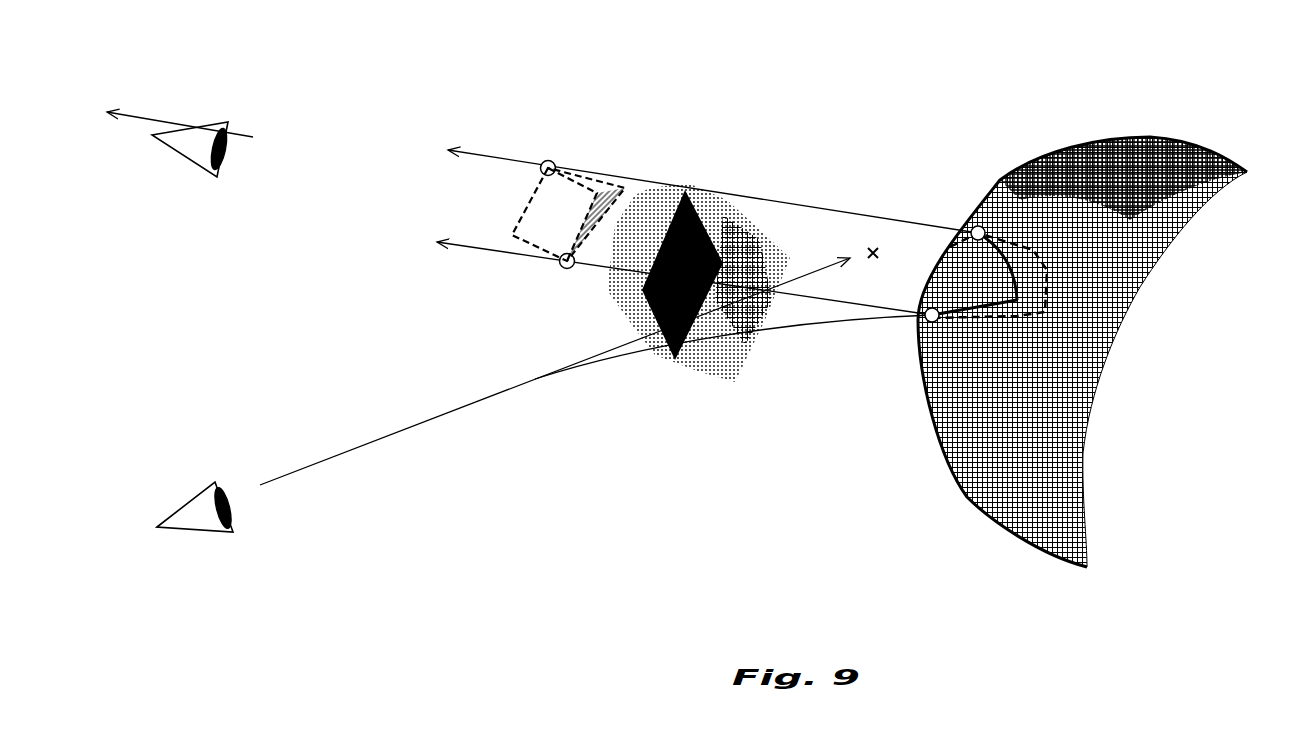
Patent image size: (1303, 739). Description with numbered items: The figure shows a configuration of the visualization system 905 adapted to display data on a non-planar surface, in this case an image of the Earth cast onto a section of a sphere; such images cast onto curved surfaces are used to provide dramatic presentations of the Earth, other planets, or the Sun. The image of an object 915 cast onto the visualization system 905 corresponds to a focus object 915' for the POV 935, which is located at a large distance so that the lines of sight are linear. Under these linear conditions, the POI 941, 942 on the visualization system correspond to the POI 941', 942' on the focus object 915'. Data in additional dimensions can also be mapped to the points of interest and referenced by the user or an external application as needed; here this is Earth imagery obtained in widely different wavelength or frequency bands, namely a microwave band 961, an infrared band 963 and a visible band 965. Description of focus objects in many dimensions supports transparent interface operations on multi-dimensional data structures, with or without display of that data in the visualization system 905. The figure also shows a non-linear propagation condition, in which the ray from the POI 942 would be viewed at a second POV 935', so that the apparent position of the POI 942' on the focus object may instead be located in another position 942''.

The visualization system 905 is at (1033, 158).
The object 915 is at (1060, 315).
The focus object 915' is at (571, 163).
The POV 935 is at (163, 121).
The POV 935' is at (195, 472).
The POI 941 is at (962, 246).
The POI 941' is at (713, 178).
The POI 942 is at (776, 339).
The POI 942' is at (684, 278).
The apparent position 942'' is at (577, 322).
The microwave band 961 is at (662, 198).
The infrared band 963 is at (703, 205).
The visible band 965 is at (755, 227).